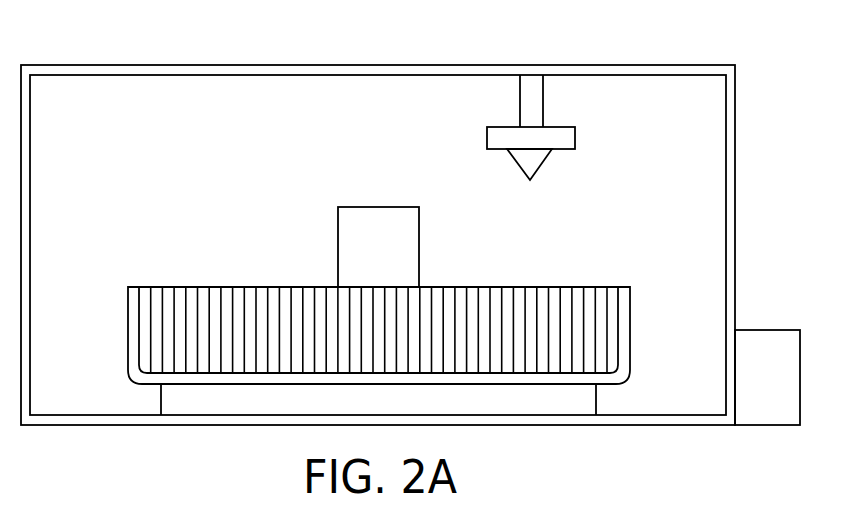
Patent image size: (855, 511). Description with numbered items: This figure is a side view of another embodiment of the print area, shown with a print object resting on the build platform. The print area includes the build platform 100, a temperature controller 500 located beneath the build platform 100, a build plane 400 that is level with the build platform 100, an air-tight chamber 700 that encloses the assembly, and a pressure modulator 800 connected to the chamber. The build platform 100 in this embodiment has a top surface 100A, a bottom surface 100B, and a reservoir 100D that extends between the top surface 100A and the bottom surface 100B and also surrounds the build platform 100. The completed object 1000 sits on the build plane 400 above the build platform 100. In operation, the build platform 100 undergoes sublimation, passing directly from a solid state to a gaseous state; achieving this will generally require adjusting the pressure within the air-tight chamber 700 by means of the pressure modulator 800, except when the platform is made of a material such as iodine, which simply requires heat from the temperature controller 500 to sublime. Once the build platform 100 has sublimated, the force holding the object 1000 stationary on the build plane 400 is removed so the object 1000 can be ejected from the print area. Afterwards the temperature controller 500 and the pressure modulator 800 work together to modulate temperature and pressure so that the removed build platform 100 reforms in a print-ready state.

The air-tight chamber 700 is at (694, 65).
The pressure modulator 800 is at (770, 330).
The object 1000 is at (378, 206).
The build platform 100 is at (376, 315).
The build plane 400 is at (127, 285).
The top surface 100A is at (204, 285).
The bottom surface 100B is at (140, 368).
The reservoir 100D is at (623, 378).
The temperature controller 500 is at (158, 400).